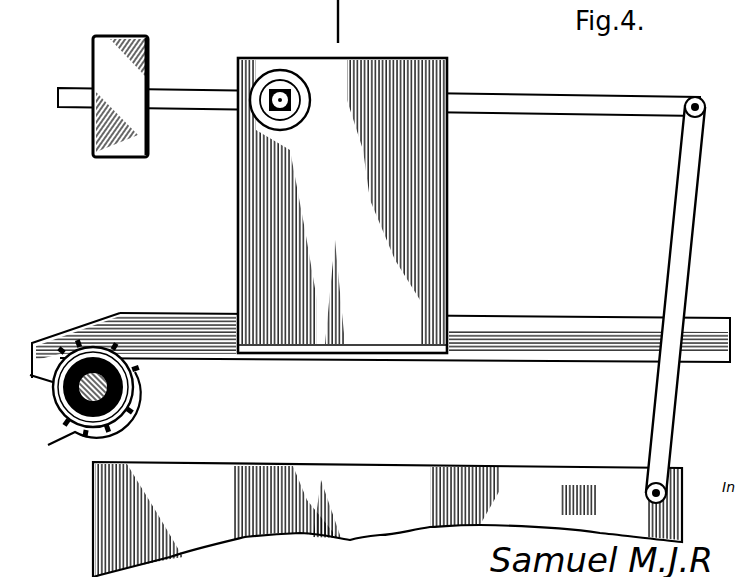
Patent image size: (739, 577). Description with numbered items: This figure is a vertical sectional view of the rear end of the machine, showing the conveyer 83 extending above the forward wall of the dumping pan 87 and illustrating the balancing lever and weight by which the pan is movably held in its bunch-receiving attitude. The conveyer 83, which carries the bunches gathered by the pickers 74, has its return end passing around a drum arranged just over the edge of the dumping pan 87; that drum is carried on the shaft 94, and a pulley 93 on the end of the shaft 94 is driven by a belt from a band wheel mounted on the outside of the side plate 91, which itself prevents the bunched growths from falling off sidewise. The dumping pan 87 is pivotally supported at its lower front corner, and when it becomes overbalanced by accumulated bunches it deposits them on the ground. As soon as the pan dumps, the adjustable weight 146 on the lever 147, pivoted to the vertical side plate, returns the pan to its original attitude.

The adjustable weight 146 is at (131, 35).
The pickers 74 is at (340, 14).
The lever 147 is at (584, 96).
The side plate 91 is at (414, 187).
The shaft 94 is at (104, 387).
The pulley 93 is at (70, 398).
The conveyer 83 is at (57, 446).
The dumping pan 87 is at (377, 476).